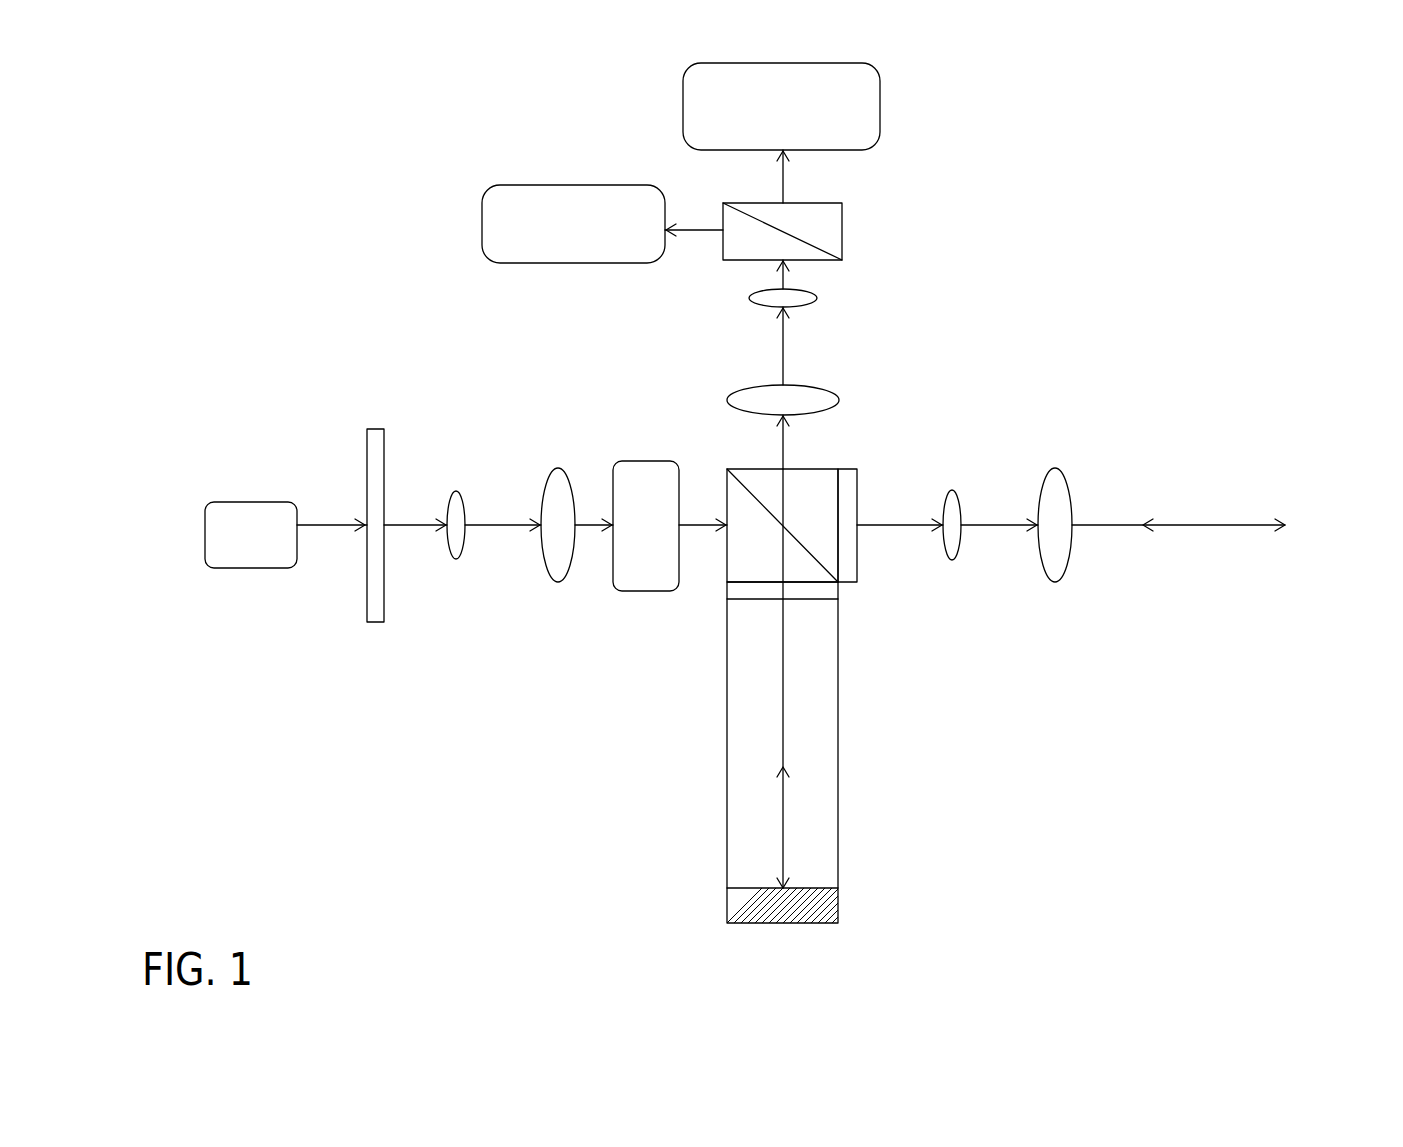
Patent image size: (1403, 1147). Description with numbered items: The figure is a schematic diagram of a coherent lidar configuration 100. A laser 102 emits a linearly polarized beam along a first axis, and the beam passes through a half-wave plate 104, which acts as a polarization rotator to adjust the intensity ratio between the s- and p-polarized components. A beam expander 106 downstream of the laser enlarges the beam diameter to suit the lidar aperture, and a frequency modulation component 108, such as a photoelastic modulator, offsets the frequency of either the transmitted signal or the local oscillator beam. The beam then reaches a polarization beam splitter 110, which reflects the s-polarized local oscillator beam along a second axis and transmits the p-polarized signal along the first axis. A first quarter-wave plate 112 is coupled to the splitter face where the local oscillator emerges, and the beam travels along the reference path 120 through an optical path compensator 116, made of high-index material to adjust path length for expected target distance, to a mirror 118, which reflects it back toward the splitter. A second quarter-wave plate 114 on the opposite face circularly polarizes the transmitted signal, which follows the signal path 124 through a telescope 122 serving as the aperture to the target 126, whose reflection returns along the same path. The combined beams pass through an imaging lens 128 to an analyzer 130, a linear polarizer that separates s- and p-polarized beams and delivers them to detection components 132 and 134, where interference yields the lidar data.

The coherent lidar configuration 100 is at (212, 175).
The laser 102 is at (267, 559).
The half-wave plate 104 is at (376, 429).
The beam expander 106 is at (558, 470).
The frequency modulation component 108 is at (672, 461).
The polarization beam splitter 110 is at (727, 569).
The first quarter-wave plate 112 is at (727, 590).
The second quarter-wave plate 114 is at (857, 570).
The optical path compensator 116 is at (727, 820).
The mirror 118 is at (727, 903).
The reference path 120 is at (783, 847).
The telescope 122 is at (1055, 468).
The signal path 124 is at (1238, 624).
The target 126 is at (1376, 554).
The imaging lens 128 is at (817, 298).
The analyzer 130 is at (842, 230).
The detection component 132 is at (850, 137).
The detection component 134 is at (641, 249).